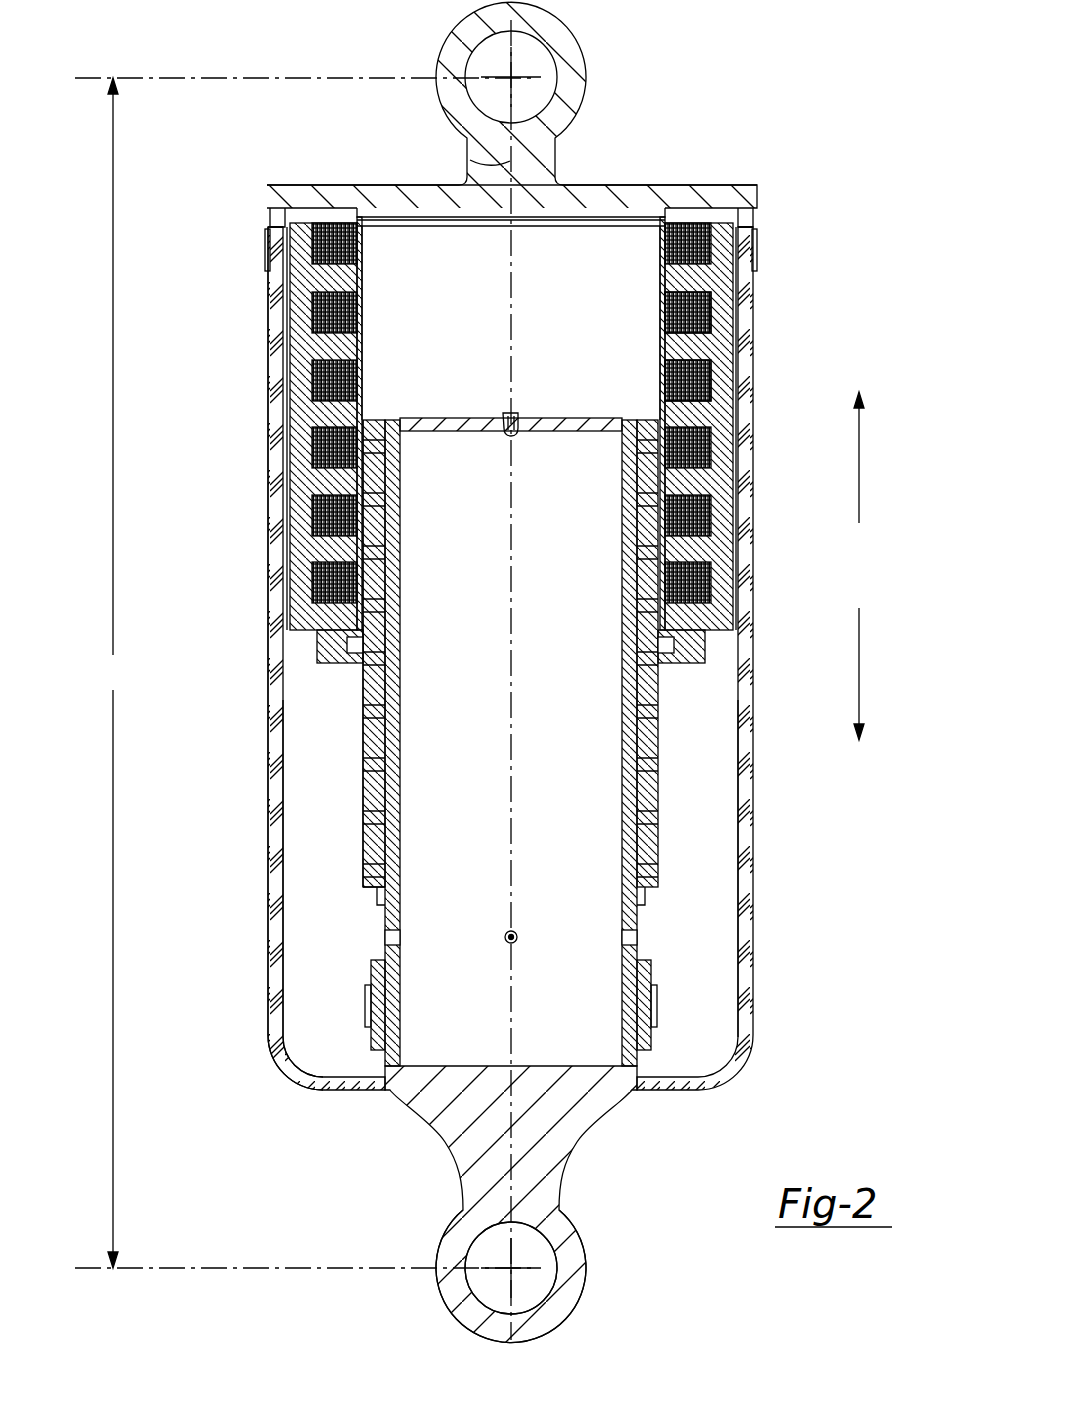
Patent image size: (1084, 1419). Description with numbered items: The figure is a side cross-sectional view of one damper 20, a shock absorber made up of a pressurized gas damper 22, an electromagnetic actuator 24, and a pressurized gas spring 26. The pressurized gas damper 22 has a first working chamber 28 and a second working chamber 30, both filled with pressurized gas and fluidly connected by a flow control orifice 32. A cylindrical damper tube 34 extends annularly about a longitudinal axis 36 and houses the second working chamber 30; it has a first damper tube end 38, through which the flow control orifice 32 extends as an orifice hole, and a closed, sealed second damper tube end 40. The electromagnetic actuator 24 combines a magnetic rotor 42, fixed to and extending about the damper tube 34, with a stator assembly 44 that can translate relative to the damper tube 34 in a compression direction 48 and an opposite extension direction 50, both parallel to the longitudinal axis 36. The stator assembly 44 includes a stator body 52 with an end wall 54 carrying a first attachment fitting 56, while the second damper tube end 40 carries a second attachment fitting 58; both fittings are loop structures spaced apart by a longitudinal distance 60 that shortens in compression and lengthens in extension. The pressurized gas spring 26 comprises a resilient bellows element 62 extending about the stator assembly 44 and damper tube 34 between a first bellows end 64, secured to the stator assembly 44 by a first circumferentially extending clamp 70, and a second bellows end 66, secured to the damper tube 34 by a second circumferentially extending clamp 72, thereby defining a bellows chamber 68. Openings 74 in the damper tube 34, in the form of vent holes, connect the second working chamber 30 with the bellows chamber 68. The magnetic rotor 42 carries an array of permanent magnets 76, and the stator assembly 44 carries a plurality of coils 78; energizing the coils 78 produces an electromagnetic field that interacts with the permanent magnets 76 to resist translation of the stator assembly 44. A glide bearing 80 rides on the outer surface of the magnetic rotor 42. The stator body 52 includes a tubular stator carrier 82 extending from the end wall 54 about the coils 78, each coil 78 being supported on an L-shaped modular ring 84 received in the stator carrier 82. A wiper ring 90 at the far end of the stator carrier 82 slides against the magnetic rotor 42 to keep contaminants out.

The damper 20 is at (180, 50).
The pressurized gas damper 22 is at (451, 462).
The electromagnetic actuator 24 is at (293, 650).
The pressurized gas spring 26 is at (262, 908).
The first working chamber 28 is at (574, 273).
The second working chamber 30 is at (564, 718).
The flow control orifice 32 is at (514, 410).
The damper tube 34 is at (392, 800).
The longitudinal axis 36 is at (468, 158).
The first damper tube end 38 is at (430, 418).
The second damper tube end 40 is at (418, 1068).
The magnetic rotor 42 is at (350, 803).
The stator assembly 44 is at (655, 312).
The compression direction 48 is at (862, 625).
The extension direction 50 is at (862, 440).
The stator body 52 is at (762, 188).
The end wall 54 is at (637, 195).
The first attachment fitting 56 is at (575, 65).
The second attachment fitting 58 is at (567, 1275).
The longitudinal distance 60 is at (306, 673).
The bellows element 62 is at (275, 785).
The first bellows end 64 is at (262, 222).
The second bellows end 66 is at (272, 1082).
The bellows chamber 68 is at (330, 943).
The first circumferentially extending clamp 70 is at (264, 248).
The second circumferentially extending clamp 72 is at (367, 998).
The openings 74 is at (400, 937).
The permanent magnets 76 is at (388, 738).
The coils 78 is at (340, 300).
The glide bearing 80 is at (658, 365).
The stator carrier 82 is at (298, 378).
The modular ring 84 is at (722, 400).
The wiper ring 90 is at (672, 645).